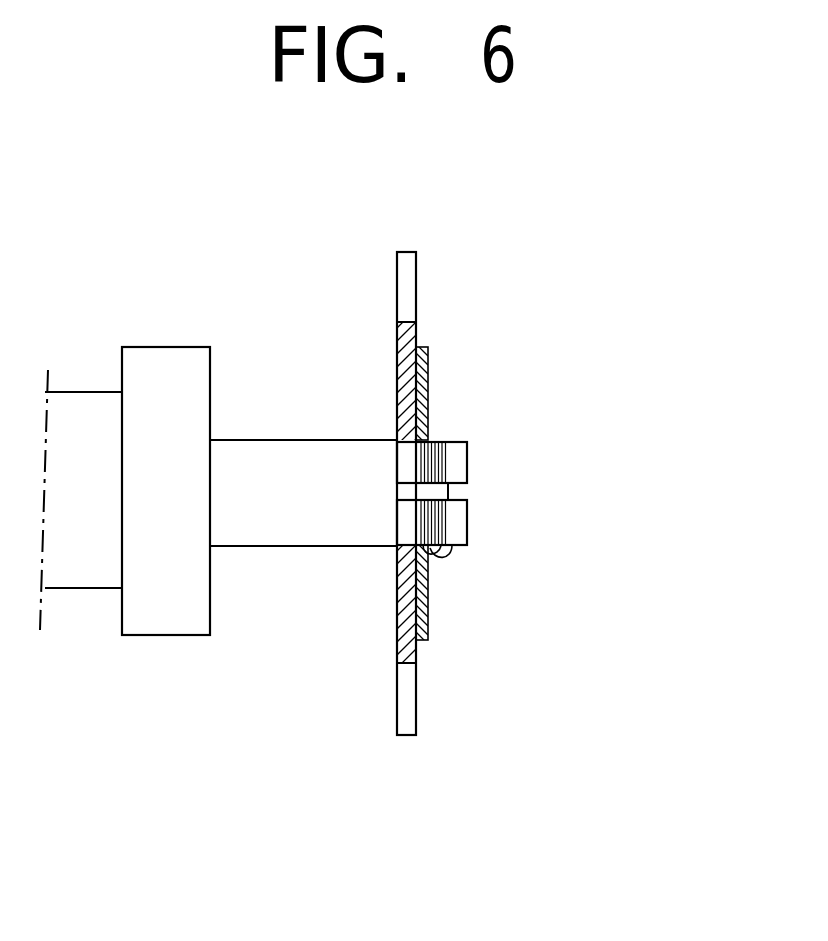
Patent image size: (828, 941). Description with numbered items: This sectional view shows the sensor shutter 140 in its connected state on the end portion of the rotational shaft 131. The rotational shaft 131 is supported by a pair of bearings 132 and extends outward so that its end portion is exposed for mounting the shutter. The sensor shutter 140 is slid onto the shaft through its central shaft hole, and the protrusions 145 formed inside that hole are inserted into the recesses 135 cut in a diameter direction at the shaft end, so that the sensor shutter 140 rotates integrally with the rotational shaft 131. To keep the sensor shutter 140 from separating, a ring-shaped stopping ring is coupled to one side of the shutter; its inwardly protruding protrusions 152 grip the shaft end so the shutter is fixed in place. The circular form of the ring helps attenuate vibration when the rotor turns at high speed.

The rotational shaft 131 is at (83, 392).
The bearings 132 is at (167, 347).
The recesses 135 is at (470, 490).
The sensor shutter 140 is at (403, 737).
The protrusions 145 is at (405, 492).
The protrusions 152 is at (451, 546).